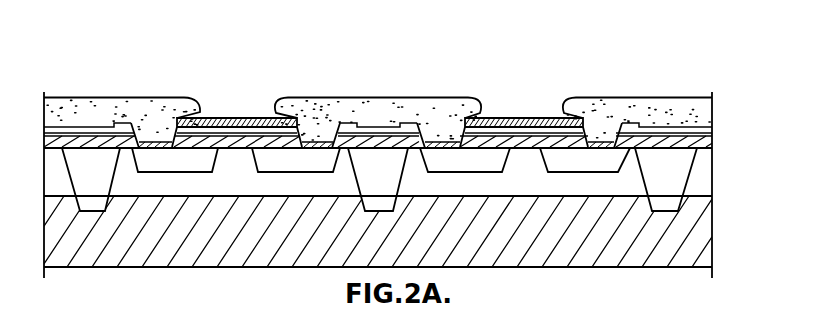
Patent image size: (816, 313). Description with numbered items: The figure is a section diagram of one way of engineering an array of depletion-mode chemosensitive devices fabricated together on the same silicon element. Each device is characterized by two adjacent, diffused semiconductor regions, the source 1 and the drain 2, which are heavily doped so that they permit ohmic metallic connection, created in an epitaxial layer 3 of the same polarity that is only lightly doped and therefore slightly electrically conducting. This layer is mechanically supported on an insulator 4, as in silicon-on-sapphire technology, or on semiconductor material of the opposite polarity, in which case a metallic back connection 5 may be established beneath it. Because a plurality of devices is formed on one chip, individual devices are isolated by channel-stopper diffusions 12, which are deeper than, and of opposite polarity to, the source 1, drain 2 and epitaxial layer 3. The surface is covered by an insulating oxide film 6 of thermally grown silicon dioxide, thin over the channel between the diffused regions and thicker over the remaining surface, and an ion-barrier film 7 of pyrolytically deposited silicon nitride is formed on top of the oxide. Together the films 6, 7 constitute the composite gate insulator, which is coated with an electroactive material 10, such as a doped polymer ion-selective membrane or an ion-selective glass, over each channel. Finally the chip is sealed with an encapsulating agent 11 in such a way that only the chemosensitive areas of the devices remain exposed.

The source 1 is at (321, 160).
The drain 2 is at (441, 160).
The epitaxial layer 3 is at (713, 177).
The insulator 4 is at (713, 240).
The metallic back connection 5 is at (713, 270).
The insulating oxide film 6 is at (713, 138).
The ion-barrier film 7 is at (713, 131).
The electroactive material 10 is at (238, 117).
The encapsulating agent 11 is at (713, 106).
The channel-stopper diffusions 12 is at (379, 179).